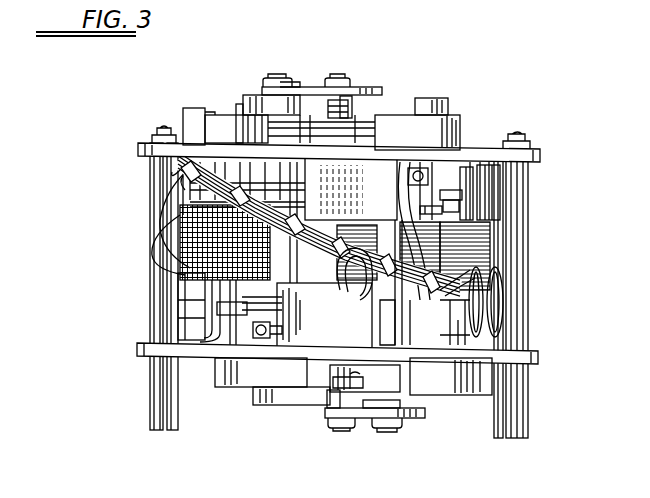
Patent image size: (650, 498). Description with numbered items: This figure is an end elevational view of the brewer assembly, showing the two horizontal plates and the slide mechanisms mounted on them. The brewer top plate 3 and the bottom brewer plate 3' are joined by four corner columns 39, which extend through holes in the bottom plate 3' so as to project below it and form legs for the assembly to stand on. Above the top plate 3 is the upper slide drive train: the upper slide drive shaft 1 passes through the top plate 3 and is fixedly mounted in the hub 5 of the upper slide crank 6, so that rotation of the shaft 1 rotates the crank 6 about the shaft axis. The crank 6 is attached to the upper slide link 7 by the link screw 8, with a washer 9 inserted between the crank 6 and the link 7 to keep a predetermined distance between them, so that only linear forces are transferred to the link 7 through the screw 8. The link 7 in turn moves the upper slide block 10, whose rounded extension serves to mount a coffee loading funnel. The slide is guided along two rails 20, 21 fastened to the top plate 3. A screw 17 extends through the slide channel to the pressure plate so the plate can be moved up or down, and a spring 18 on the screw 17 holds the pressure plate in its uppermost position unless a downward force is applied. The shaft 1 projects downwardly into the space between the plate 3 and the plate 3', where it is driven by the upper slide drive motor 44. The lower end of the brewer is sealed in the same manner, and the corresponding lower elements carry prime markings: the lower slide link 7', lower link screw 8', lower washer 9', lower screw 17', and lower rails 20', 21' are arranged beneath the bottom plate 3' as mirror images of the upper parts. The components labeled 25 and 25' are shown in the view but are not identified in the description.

The upper slide drive shaft 1 is at (257, 130).
The brewer top plate 3 is at (321, 150).
The bottom brewer plate 3' is at (318, 353).
The hub 5 is at (243, 108).
The upper slide crank 6 is at (255, 99).
The upper slide link 7 is at (322, 75).
The lower slide link 7' is at (375, 427).
The link screw 8 is at (276, 71).
The lower link screw 8' is at (387, 447).
The washer 9 is at (290, 75).
The lower washer 9' is at (390, 432).
The upper slide block 10 is at (437, 98).
The screw 17 is at (327, 108).
The lower screw 17' is at (345, 399).
The spring 18 is at (350, 114).
The rail 20 is at (431, 122).
The lower rail 20' is at (451, 388).
The rail 21 is at (191, 115).
The lower rail 21' is at (272, 385).
The clamp bolt 25 is at (341, 71).
The lower clamp bolt 25' is at (342, 432).
The corner columns 39 is at (150, 397).
The upper slide drive motor 44 is at (240, 284).